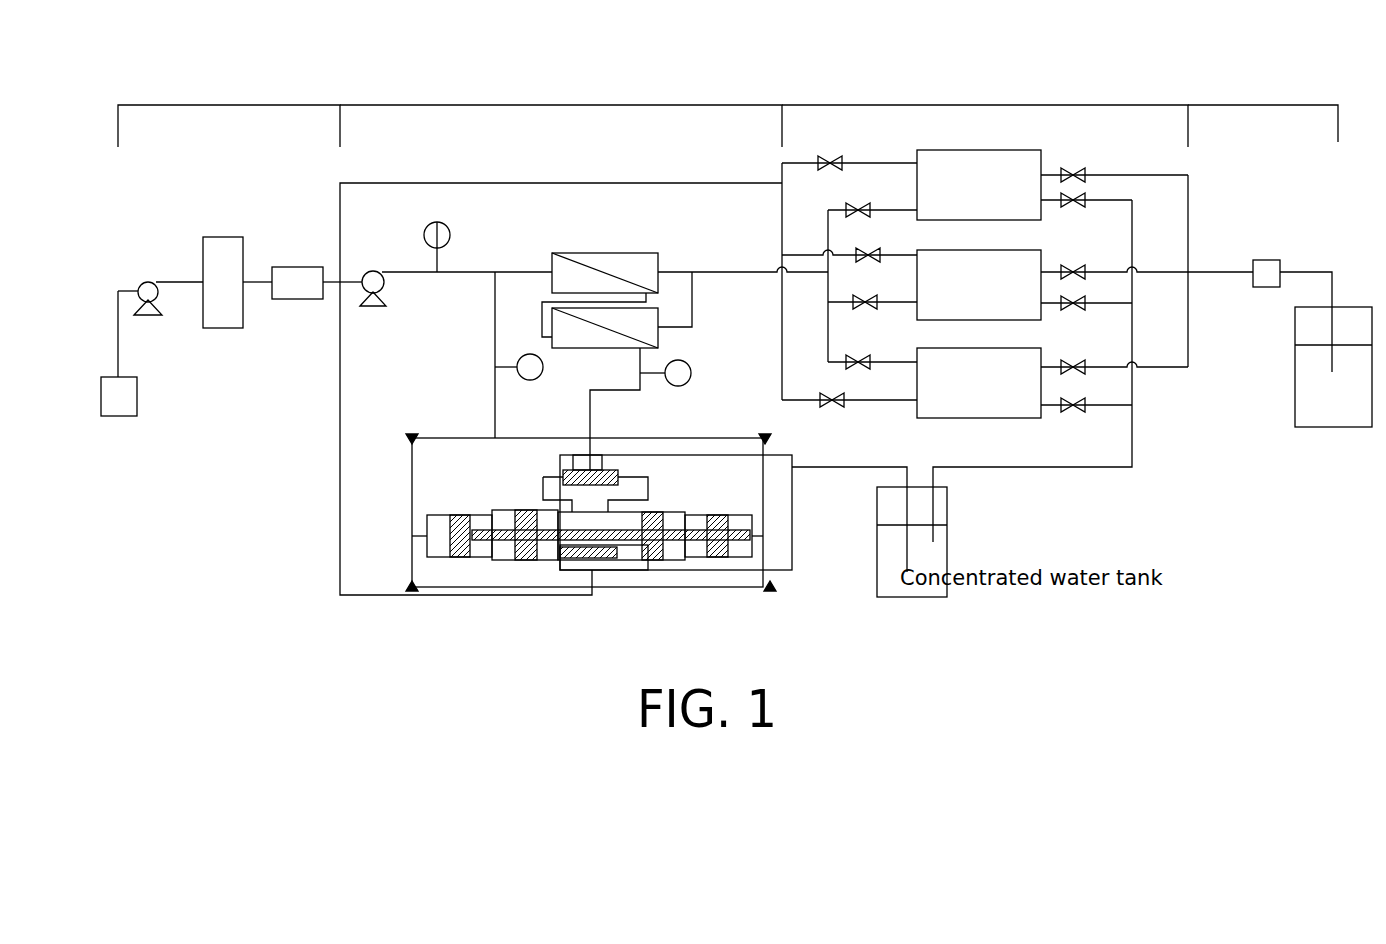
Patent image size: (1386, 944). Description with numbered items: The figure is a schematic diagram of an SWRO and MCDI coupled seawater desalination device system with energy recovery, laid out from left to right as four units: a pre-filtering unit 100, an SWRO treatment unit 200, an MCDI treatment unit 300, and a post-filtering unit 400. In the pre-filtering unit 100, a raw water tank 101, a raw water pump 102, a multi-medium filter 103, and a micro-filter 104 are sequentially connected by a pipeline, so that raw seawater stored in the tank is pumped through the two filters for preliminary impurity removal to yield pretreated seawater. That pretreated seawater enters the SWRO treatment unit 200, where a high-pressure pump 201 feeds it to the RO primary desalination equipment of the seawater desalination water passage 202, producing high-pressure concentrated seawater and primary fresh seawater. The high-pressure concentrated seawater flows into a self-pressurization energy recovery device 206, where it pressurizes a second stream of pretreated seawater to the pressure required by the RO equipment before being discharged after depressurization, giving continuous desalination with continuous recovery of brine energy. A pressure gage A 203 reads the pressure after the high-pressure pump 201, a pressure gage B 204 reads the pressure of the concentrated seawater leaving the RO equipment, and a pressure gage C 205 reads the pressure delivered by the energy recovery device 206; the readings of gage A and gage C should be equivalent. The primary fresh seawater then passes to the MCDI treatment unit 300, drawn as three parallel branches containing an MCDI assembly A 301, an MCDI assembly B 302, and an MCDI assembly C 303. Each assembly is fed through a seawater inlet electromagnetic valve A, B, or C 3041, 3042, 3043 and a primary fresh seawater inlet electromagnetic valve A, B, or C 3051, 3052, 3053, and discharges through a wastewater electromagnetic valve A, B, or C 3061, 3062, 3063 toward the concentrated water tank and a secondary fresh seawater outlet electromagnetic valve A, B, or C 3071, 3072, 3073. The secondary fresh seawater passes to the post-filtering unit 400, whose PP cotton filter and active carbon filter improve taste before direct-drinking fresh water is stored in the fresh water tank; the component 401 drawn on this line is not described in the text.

The pre-filtering unit 100 is at (229, 106).
The raw water tank 101 is at (115, 395).
The raw water pump 102 is at (148, 284).
The multi-medium filter 103 is at (222, 267).
The micro-filter 104 is at (300, 282).
The SWRO treatment unit 200 is at (561, 333).
The high-pressure pump 201 is at (373, 270).
The seawater desalination water passage 202 is at (628, 267).
The pressure gage A 203 is at (434, 222).
The pressure gage B 204 is at (690, 363).
The pressure gage C 205 is at (535, 356).
The self-pressurization energy recovery device 206 is at (467, 482).
The MCDI treatment unit 300 is at (923, 304).
The MCDI assembly A 301 is at (963, 177).
The MCDI assembly B 302 is at (958, 272).
The MCDI assembly C 303 is at (953, 368).
The seawater inlet electromagnetic valve A 3041 is at (842, 161).
The seawater inlet electromagnetic valve B 3042 is at (862, 258).
The seawater inlet electromagnetic valve C 3043 is at (835, 399).
The primary fresh seawater inlet electromagnetic valve A 3051 is at (856, 211).
The primary fresh seawater inlet electromagnetic valve B 3052 is at (859, 305).
The primary fresh seawater inlet electromagnetic valve C 3053 is at (856, 361).
The wastewater electromagnetic valve A 3061 is at (1081, 176).
The wastewater electromagnetic valve B 3062 is at (1083, 273).
The wastewater electromagnetic valve C 3063 is at (1083, 368).
The secondary fresh seawater outlet electromagnetic valve A 3071 is at (1082, 203).
The secondary fresh seawater outlet electromagnetic valve B 3072 is at (1083, 305).
The secondary fresh seawater outlet electromagnetic valve C 3073 is at (1083, 406).
The post-filtering unit 400 is at (1263, 104).
The flow meter 401 is at (1267, 272).